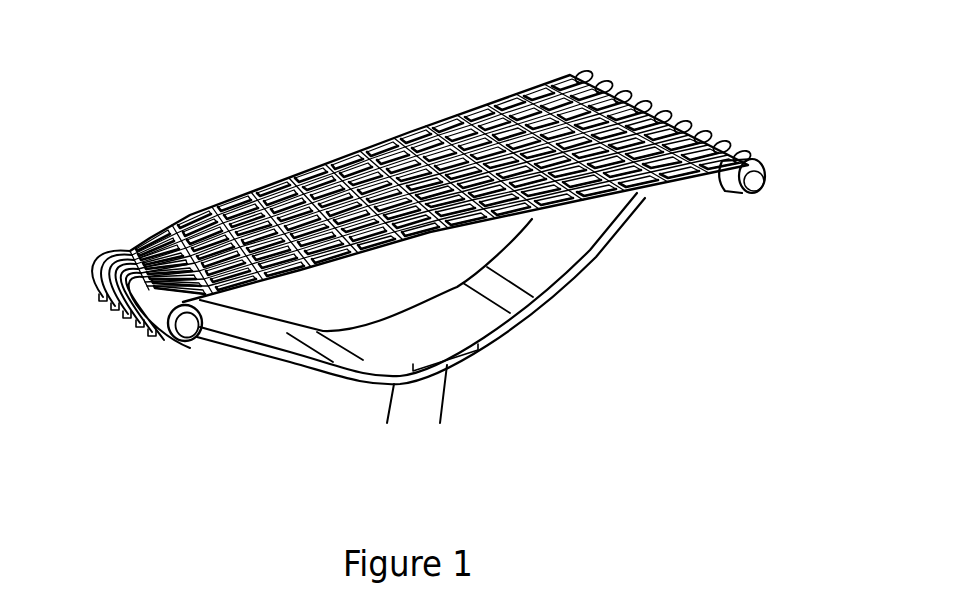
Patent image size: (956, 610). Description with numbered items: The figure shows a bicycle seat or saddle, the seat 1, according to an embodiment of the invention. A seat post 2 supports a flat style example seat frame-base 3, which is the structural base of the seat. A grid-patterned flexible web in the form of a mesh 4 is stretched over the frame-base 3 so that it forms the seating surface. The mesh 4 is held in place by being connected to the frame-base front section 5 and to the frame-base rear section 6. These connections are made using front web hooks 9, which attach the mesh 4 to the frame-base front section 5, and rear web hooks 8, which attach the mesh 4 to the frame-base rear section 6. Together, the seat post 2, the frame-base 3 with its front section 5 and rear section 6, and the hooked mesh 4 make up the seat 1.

The seat 1 is at (458, 272).
The seat post 2 is at (453, 403).
The seat frame-base 3 is at (268, 368).
The mesh 4 is at (192, 213).
The frame-base front section 5 is at (125, 322).
The frame-base rear section 6 is at (768, 200).
The rear web hooks 8 is at (750, 152).
The front web hooks 9 is at (160, 343).